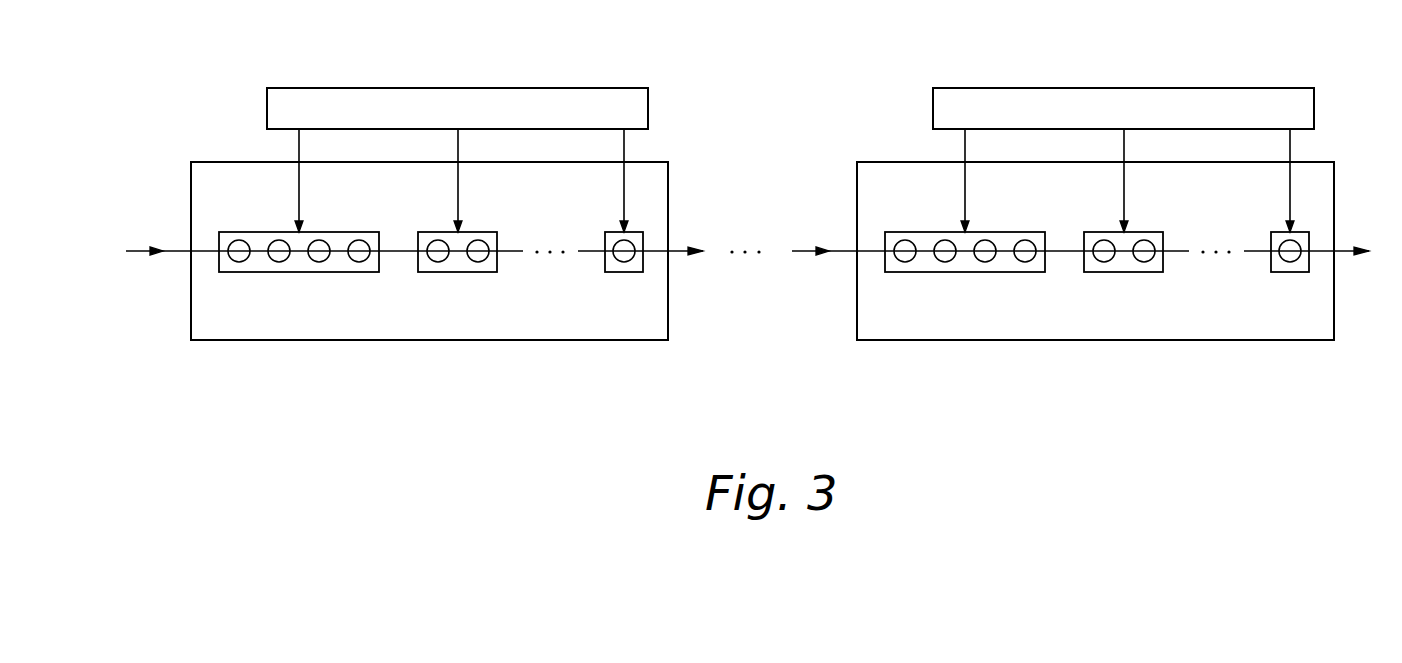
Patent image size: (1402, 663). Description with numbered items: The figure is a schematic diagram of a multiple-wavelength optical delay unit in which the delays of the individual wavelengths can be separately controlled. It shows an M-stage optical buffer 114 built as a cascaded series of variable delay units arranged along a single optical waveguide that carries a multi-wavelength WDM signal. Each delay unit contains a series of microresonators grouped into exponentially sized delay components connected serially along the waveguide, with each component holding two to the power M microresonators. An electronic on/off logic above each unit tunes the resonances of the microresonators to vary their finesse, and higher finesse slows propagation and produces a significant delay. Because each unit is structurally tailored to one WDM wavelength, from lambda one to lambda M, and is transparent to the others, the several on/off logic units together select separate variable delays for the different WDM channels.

The M-stage optical buffer 114 is at (744, 215).